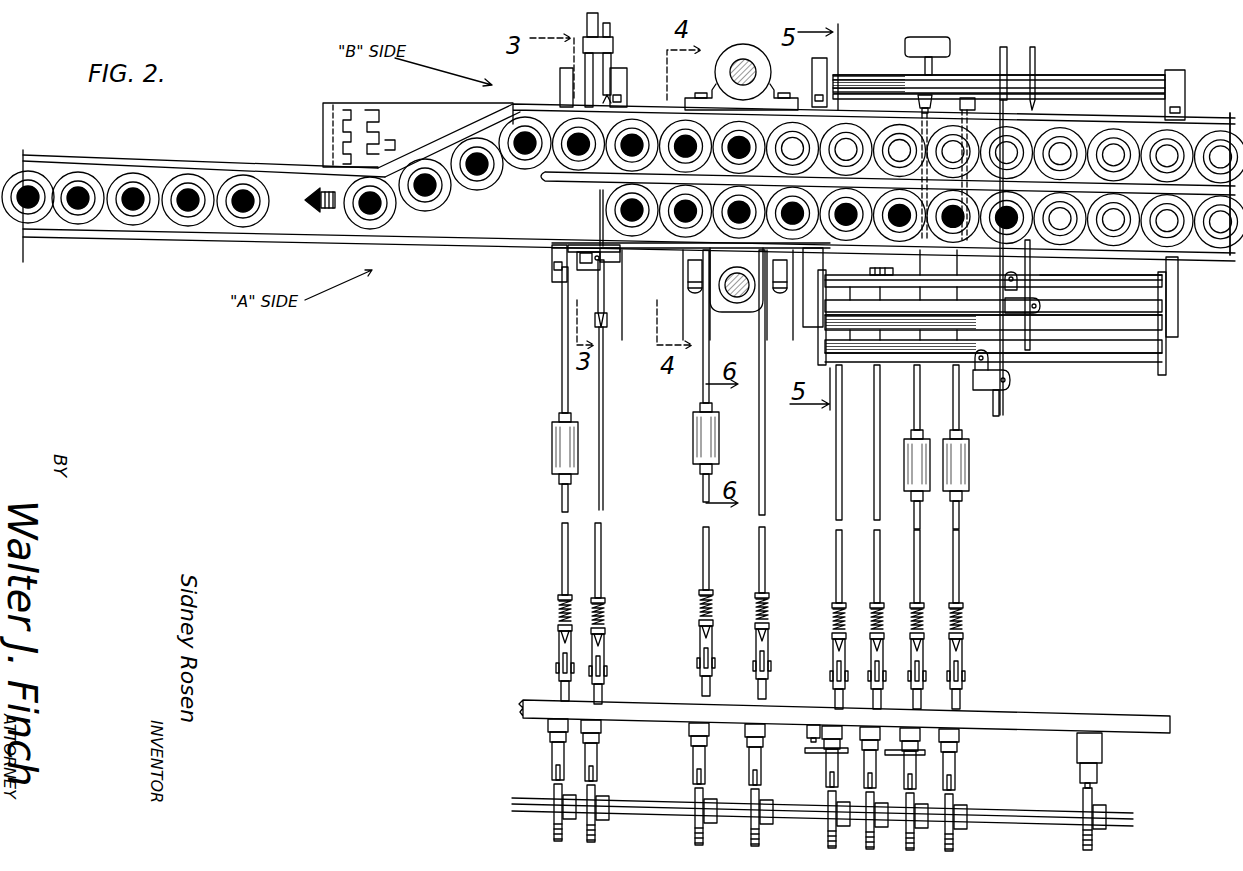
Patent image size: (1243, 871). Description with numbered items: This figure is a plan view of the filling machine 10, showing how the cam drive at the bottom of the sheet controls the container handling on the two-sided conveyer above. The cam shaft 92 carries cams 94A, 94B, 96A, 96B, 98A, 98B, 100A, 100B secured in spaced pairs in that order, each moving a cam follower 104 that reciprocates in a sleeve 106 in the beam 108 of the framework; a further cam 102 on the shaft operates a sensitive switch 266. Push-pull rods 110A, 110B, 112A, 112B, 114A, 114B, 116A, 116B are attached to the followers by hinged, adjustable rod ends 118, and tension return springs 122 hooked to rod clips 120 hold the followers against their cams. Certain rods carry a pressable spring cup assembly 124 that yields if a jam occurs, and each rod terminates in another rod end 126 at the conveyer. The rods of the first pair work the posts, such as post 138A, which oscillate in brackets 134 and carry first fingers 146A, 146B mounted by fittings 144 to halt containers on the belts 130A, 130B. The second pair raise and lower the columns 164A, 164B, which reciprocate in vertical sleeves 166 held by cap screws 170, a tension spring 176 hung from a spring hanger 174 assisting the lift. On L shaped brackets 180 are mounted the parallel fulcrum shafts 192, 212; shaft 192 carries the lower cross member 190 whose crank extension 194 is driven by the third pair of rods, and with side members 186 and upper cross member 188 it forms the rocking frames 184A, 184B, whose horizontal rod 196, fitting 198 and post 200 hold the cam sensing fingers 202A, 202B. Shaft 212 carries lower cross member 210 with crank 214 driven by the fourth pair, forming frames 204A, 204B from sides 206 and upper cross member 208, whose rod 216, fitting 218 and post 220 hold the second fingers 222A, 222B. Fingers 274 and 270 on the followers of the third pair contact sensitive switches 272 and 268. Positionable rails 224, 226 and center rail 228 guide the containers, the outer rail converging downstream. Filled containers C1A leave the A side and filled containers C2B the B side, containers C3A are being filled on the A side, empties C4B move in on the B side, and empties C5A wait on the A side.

The apparatus 10 is at (393, 433).
The cam shaft 92 is at (522, 798).
The cam 94A is at (596, 838).
The cam 94B is at (551, 836).
The cam 96A is at (694, 826).
The cam 96B is at (740, 818).
The cam 98A is at (826, 829).
The cam 98B is at (865, 843).
The cam 100A is at (908, 842).
The cam 100B is at (958, 798).
The cam 102 is at (1093, 850).
The cam follower 104 is at (692, 762).
The sleeve 106 is at (690, 731).
The beam 108 is at (975, 700).
The push-pull rod 110A is at (608, 571).
The push-pull rod 110B is at (553, 544).
The push-pull rod 112A is at (695, 547).
The push-pull rod 112B is at (772, 551).
The push-pull rod 114A is at (828, 459).
The push-pull rod 114B is at (928, 578).
The push-pull rod 116A is at (866, 479).
The push-pull rod 116B is at (967, 554).
The rod end 118 is at (700, 652).
The rod clip 120 is at (700, 591).
The return spring 122 is at (700, 614).
The spring cup assembly 124 is at (546, 446).
The rod end 126 is at (605, 307).
The belt 130A is at (275, 218).
The belt 130B is at (322, 143).
The bracket 134 is at (551, 266).
The post 138A is at (598, 22).
The fitting 144 is at (592, 246).
The first finger 146A is at (600, 210).
The first finger 146B is at (612, 64).
The column 164A is at (737, 300).
The column 164B is at (743, 58).
The vertical sleeve 166 is at (771, 72).
The cap screw 170 is at (700, 92).
The spring hanger 174 is at (696, 294).
The tension coiled spring 176 is at (688, 287).
The L shaped bracket 180 is at (1179, 310).
The rocking frame 184A is at (1079, 367).
The rocking frame 184B is at (945, 38).
The side member 186 is at (1165, 354).
The upper cross member 188 is at (1103, 354).
The lower cross member 190 is at (1122, 330).
The fulcrum shaft 192 is at (1082, 317).
The crank extension 194 is at (918, 58).
The horizontal rod 196 is at (1158, 368).
The fitting 198 is at (975, 368).
The post 200 is at (982, 391).
The cam sensing finger 202A is at (1000, 405).
The cam sensing finger 202B is at (1008, 40).
The frame 204A is at (1093, 276).
The frame 204B is at (1111, 67).
The side 206 is at (1182, 74).
The upper cross member 208 is at (1048, 282).
The lower cross member 210 is at (1130, 80).
The fulcrum shaft 212 is at (1075, 99).
The crank 214 is at (968, 96).
The rod 216 is at (935, 282).
The fitting 218 is at (1007, 272).
The post 220 is at (1041, 306).
The second finger 222A is at (1027, 352).
The second finger 222B is at (1037, 56).
The rail 224 is at (452, 240).
The rail 226 is at (628, 108).
The center rail 228 is at (556, 180).
The sensitive switch 266 is at (1103, 752).
The sensitive switch 268 is at (920, 735).
The finger 270 is at (925, 755).
The sensitive switch 272 is at (806, 737).
The finger 274 is at (806, 752).
The filled containers C1A is at (102, 244).
The filled containers C2B is at (461, 191).
The containers C3A is at (662, 238).
The empties C4B is at (810, 162).
The empties C5A is at (1227, 264).